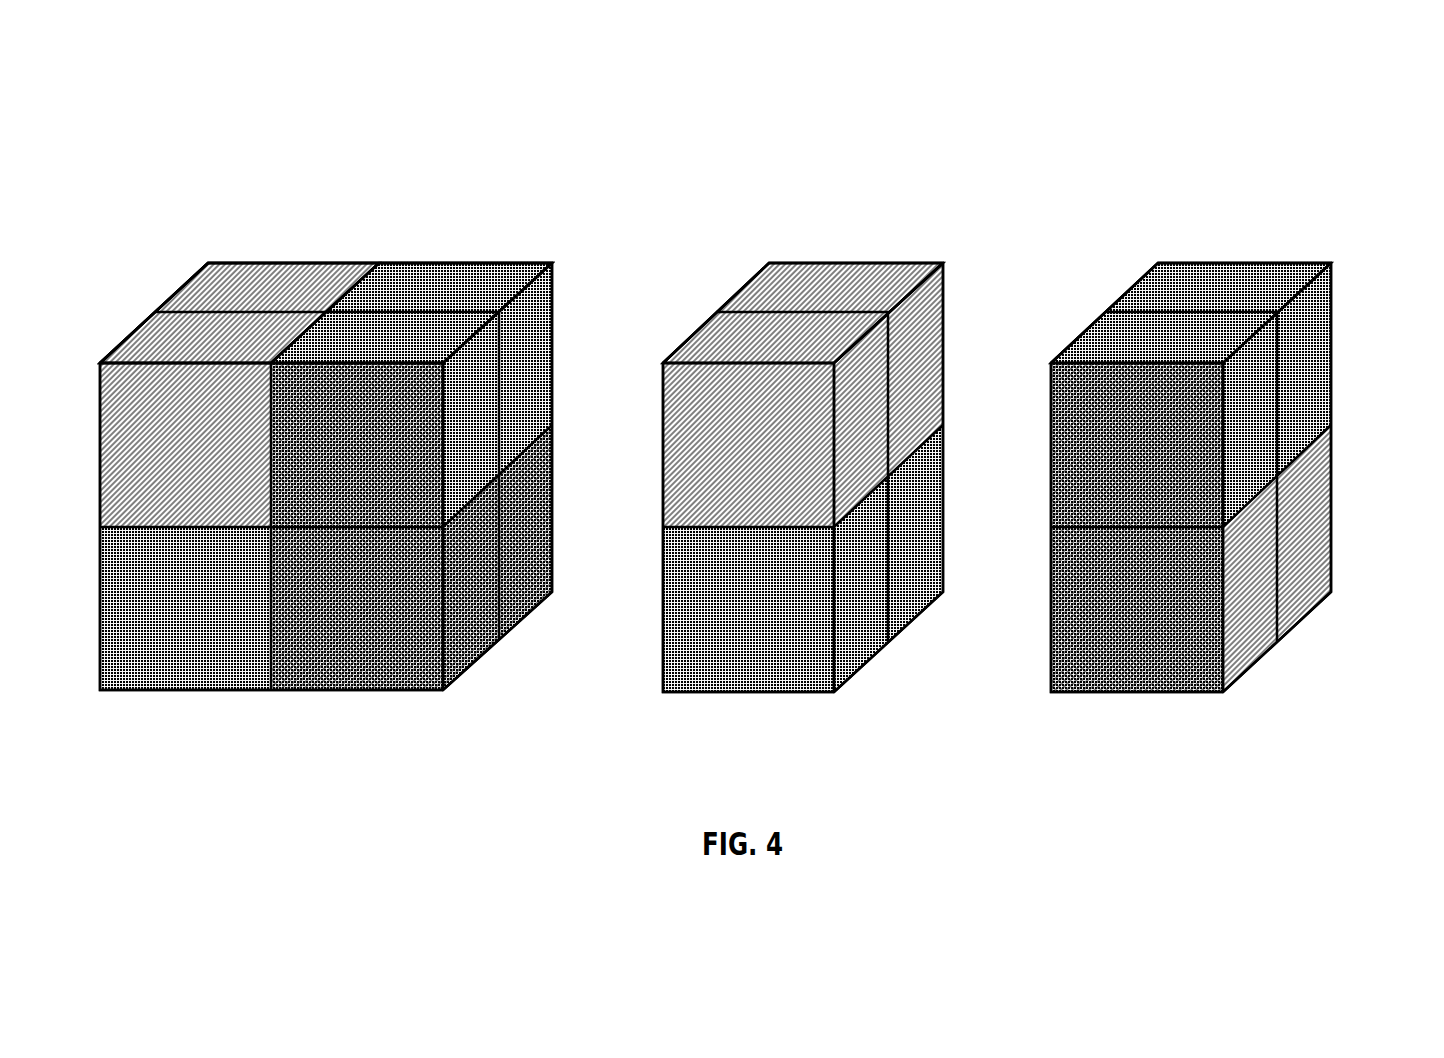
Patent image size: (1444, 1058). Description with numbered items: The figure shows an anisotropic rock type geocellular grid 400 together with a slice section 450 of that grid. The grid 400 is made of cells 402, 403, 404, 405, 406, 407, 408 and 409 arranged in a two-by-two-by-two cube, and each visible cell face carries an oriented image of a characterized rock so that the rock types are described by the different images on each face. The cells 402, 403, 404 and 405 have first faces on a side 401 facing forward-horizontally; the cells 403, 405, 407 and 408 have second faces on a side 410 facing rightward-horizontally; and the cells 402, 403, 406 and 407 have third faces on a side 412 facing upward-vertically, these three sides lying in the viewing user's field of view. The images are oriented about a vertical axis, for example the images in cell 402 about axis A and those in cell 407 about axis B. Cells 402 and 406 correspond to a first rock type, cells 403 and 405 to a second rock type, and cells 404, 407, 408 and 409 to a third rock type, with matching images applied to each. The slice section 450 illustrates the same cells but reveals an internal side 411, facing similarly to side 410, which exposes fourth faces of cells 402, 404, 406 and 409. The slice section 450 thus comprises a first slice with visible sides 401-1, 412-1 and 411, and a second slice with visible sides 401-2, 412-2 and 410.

The anisotropic rock type geocellular grid 400 is at (537, 121).
The slice section 450 is at (1344, 120).
The side 401 is at (271, 713).
The visible side of first slice 401-1 is at (749, 713).
The visible side of second slice 401-2 is at (1137, 713).
The cell 402 is at (165, 460).
The cell 403 is at (337, 460).
The cell 404 is at (165, 623).
The cell 405 is at (337, 623).
The cell 406 is at (266, 280).
The cell 407 is at (440, 284).
The cell 408 is at (528, 538).
The cell 409 is at (918, 541).
The side 410 is at (566, 321).
The internal side 411 is at (951, 322).
The side 412 is at (254, 170).
The visible side of first slice 412-1 is at (919, 183).
The visible side of second slice 412-2 is at (1317, 185).
The axis A is at (183, 330).
The axis B is at (505, 288).